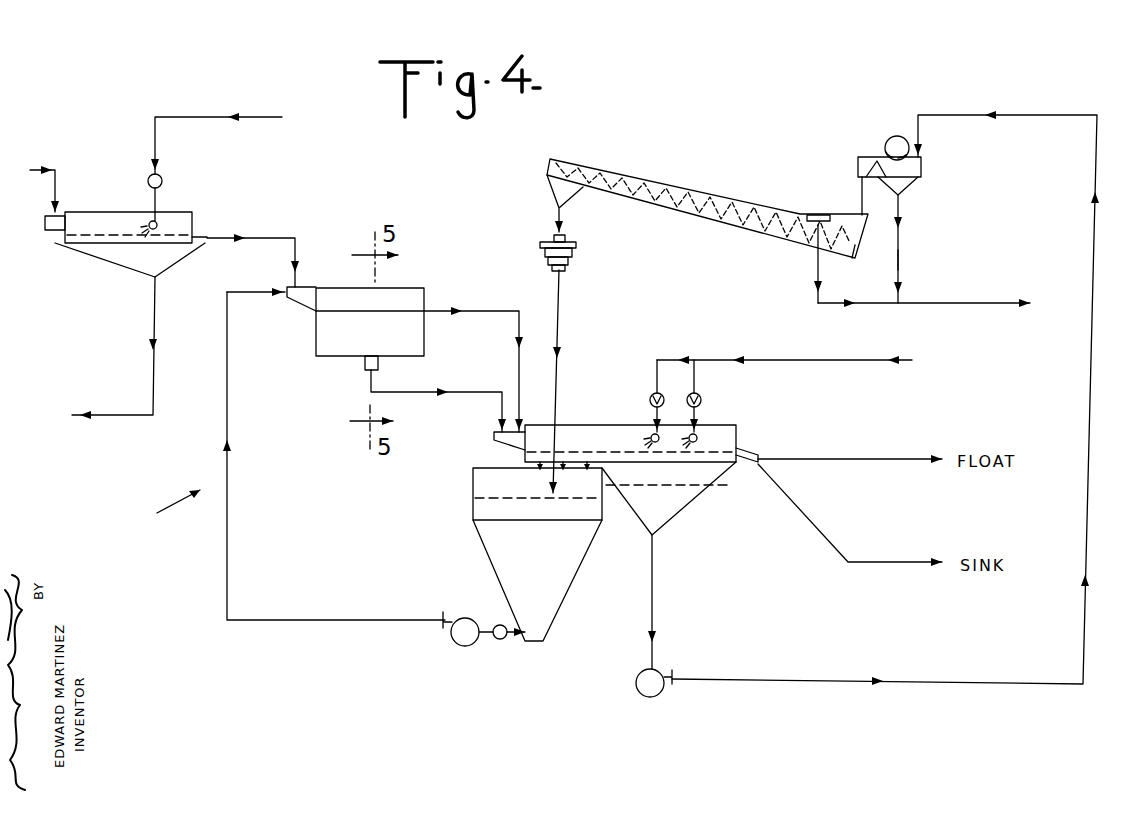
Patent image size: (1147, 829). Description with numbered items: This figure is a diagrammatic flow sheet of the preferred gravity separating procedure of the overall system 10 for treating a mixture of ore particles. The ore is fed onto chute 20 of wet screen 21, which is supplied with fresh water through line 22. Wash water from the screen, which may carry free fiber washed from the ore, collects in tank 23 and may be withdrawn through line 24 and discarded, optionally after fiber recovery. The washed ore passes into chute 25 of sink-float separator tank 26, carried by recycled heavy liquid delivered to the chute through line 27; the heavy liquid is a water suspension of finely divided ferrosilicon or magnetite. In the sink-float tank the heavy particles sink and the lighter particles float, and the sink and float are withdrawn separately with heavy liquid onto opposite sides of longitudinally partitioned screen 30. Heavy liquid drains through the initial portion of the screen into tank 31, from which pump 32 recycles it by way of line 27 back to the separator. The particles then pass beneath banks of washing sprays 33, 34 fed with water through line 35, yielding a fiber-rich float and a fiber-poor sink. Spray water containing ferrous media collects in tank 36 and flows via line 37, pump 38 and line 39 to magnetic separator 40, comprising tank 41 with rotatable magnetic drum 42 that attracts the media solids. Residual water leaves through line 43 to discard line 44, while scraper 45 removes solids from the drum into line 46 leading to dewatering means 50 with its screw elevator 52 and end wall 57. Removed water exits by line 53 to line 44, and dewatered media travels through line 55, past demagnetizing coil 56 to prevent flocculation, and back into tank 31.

The separation system 10 is at (165, 517).
The chute 20 is at (52, 228).
The wet screen 21 is at (102, 212).
The line 22 is at (160, 170).
The tank 23 is at (97, 258).
The line 24 is at (152, 320).
The chute 25 is at (298, 300).
The sink-float separator tank 26 is at (428, 340).
The line 27 is at (227, 408).
The longitudinally partitioned screen 30 is at (585, 428).
The tank 31 is at (503, 558).
The pump 32 is at (465, 647).
The washing sprays 33 is at (657, 375).
The washing sprays 34 is at (697, 380).
The line 35 is at (800, 360).
The tank 36 is at (660, 515).
The line 37 is at (650, 615).
The pump 38 is at (650, 697).
The line 39 is at (1086, 448).
The magnetic separator 40 is at (925, 172).
The tank 41 is at (903, 188).
The rotatable magnetic drum 42 is at (915, 140).
The line 43 is at (900, 260).
The line 44 is at (973, 303).
The scraper 45 is at (878, 155).
The line 46 is at (862, 166).
The dewatering means 50 is at (733, 196).
The screw elevator 52 is at (646, 205).
The line 53 is at (818, 280).
The line 55 is at (560, 337).
The demagnetizing coil 56 is at (575, 258).
The conveyor end wall 57 is at (862, 250).